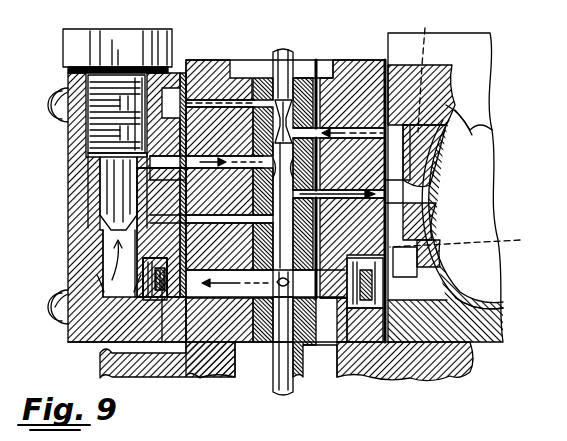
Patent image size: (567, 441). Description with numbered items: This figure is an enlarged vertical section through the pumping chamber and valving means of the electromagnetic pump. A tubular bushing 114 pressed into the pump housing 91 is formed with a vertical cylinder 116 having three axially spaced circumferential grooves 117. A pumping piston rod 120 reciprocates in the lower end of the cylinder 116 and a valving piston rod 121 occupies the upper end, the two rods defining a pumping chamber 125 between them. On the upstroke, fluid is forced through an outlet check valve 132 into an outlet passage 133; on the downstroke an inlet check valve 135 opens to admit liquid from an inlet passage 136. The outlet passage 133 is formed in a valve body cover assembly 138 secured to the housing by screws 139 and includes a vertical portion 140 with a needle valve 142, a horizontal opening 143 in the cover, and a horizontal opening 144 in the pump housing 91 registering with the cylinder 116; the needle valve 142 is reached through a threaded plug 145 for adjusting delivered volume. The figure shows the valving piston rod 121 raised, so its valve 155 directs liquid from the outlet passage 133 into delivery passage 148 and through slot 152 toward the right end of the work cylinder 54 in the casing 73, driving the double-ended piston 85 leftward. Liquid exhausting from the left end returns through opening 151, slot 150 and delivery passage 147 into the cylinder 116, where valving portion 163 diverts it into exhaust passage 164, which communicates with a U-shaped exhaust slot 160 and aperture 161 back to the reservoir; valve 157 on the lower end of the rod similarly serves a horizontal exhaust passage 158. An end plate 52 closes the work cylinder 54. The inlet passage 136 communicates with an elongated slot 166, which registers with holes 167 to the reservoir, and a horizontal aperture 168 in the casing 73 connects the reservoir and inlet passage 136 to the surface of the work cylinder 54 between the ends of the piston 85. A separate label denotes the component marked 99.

The plug 145 is at (70, 42).
The screws 139 is at (50, 103).
The horizontal opening 143 is at (117, 183).
The needle valve 142 is at (113, 205).
The vertical portion 140 is at (110, 257).
The U-shaped exhaust slot 160 is at (184, 73).
The outlet passage 133 is at (120, 290).
The valve body cover assembly 138 is at (82, 340).
The exhaust passage 164 is at (222, 90).
The aperture 161 is at (194, 119).
The horizontal exhaust passage 158 is at (196, 236).
The horizontal opening 144 is at (206, 174).
The valve 157 is at (236, 197).
The valving piston rod 121 is at (284, 50).
The increased diameter valving portion 163 is at (284, 88).
The pumping piston rod 120 is at (291, 393).
The cylinder 116 is at (295, 272).
The circumferential grooves 117 is at (303, 98).
The delivery passage 147 is at (353, 70).
The valve 155 is at (327, 157).
The delivery passage 148 is at (343, 196).
The pump housing 91 is at (208, 330).
The pumping chamber 125 is at (265, 343).
The tubular bushing 114 is at (307, 347).
The base 99 is at (110, 368).
The outlet check valve 132 is at (160, 290).
The inlet check valve 135 is at (370, 312).
The end plate 52 is at (461, 52).
The horizontal opening 151 is at (430, 71).
The work cylinder 54 is at (440, 225).
The work cylinder casing 73 is at (452, 108).
The double-ended piston 85 is at (478, 148).
The horizontal slot 150 is at (472, 173).
The horizontal slot 152 is at (403, 193).
The holes 167 is at (467, 240).
The elongated horizontal slot 166 is at (403, 260).
The inlet passage 136 is at (398, 295).
The horizontal aperture 168 is at (483, 310).